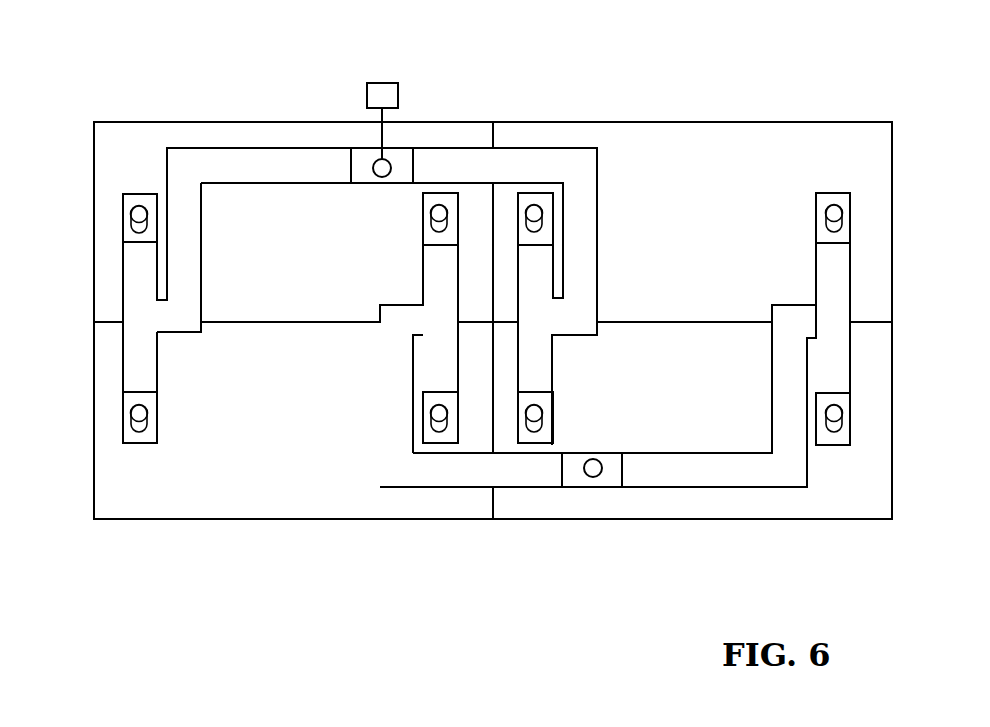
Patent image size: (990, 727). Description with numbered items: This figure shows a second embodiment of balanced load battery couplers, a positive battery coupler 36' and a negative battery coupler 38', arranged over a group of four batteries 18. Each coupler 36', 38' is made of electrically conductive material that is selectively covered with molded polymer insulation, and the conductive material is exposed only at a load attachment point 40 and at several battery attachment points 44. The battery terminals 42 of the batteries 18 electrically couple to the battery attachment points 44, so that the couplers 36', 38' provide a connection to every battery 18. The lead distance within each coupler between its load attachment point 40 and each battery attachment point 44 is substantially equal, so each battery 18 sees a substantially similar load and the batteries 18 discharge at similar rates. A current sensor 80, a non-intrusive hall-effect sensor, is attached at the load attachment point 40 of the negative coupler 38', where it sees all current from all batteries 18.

The battery 18 is at (308, 258).
The positive battery coupler 36' is at (486, 395).
The negative battery coupler 38' is at (377, 255).
The load attachment point 40 is at (389, 160).
The battery terminal 42 is at (129, 213).
The battery attachment point 44 is at (125, 235).
The current sensor 80 is at (383, 83).